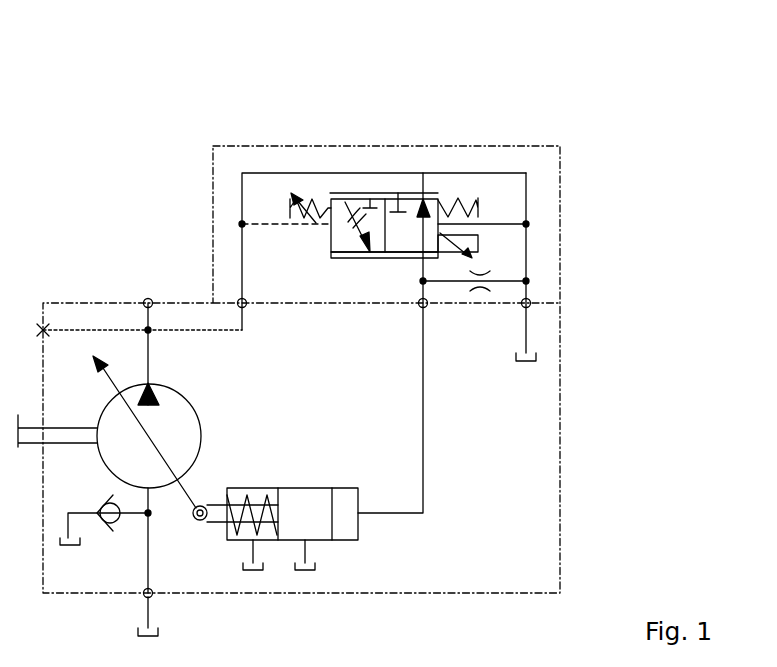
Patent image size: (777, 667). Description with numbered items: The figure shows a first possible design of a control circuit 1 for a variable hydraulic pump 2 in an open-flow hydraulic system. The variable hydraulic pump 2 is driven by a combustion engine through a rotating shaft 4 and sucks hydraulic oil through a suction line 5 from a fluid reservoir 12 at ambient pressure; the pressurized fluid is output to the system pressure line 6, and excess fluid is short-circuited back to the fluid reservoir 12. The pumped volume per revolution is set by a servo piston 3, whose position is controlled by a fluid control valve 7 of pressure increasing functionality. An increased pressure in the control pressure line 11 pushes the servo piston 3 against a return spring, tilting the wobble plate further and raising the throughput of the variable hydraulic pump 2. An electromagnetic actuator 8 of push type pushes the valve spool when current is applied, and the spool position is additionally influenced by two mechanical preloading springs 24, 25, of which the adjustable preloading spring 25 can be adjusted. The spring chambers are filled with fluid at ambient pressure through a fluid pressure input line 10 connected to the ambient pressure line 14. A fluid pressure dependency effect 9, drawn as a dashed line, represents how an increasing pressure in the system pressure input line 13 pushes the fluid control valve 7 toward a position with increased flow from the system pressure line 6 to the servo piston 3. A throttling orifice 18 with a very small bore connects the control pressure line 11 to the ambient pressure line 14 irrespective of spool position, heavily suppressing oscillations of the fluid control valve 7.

The control circuit 1 is at (645, 145).
The variable hydraulic pump 2 is at (201, 420).
The servo piston 3 is at (297, 487).
The rotating shaft 4 is at (68, 437).
The suction line 5 is at (150, 560).
The system pressure line 6 is at (100, 330).
The fluid control valve 7 is at (405, 190).
The electromagnetic actuator 8 is at (478, 242).
The fluid pressure dependency effect 9 is at (290, 224).
The fluid pressure input line 10 is at (507, 222).
The control pressure line 11 is at (423, 440).
The fluid reservoir 12 is at (536, 358).
The system pressure input line 13 is at (318, 172).
The ambient pressure line 14 is at (475, 172).
The throttling orifice 18 is at (480, 290).
The preloading spring 24 is at (478, 207).
The adjustable preloading spring 25 is at (290, 207).